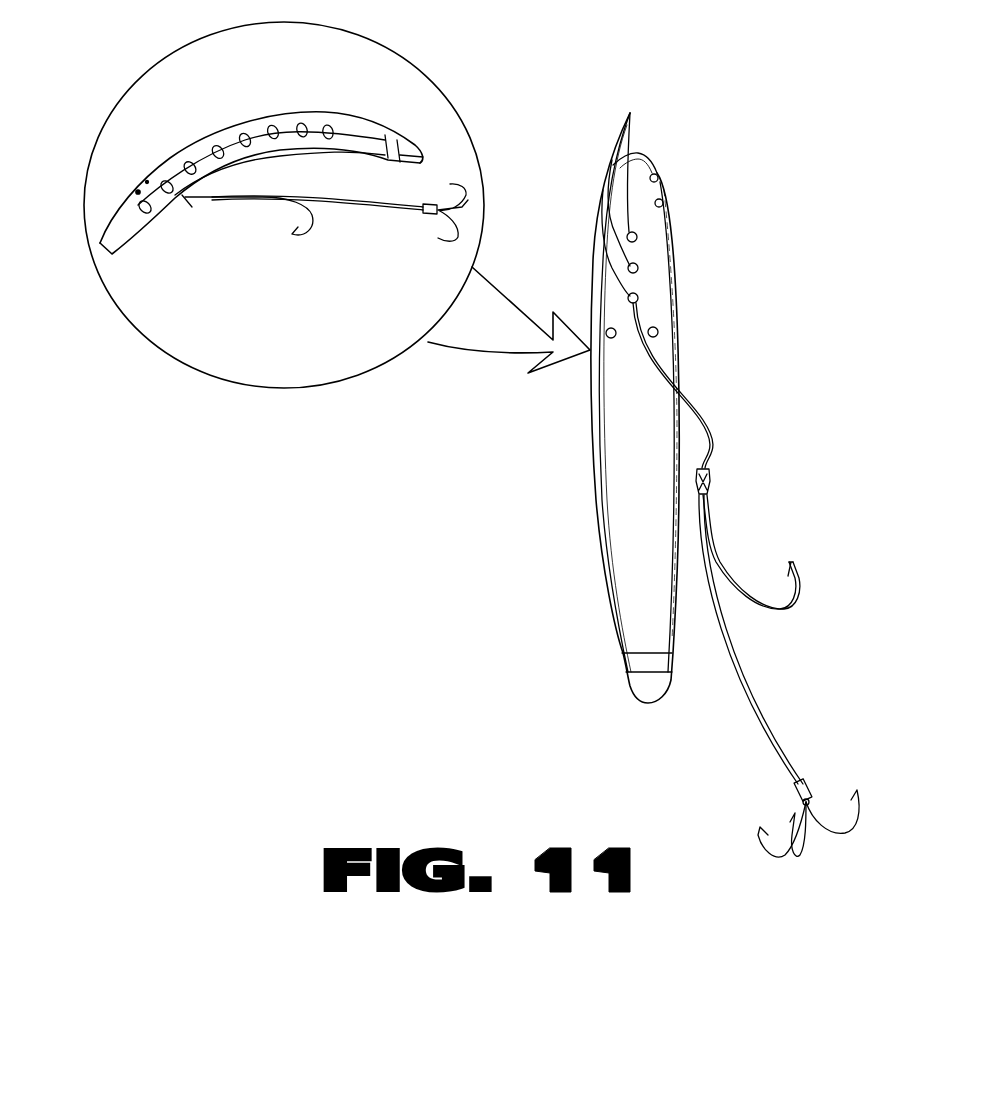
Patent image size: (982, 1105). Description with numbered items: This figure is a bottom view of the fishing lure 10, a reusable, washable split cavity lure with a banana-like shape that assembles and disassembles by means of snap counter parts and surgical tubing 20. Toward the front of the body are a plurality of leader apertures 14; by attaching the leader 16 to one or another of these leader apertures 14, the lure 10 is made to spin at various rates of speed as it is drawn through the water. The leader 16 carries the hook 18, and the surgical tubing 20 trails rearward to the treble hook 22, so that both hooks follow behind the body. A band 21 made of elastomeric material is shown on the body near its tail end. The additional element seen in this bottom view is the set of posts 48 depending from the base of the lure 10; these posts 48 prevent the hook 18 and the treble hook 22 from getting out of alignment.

The fishing lure 10 is at (600, 538).
The leader apertures 14 is at (630, 113).
The leader 16 is at (693, 405).
The hook 18 is at (803, 594).
The surgical tubing 20 is at (777, 753).
The band 21 is at (620, 673).
The treble hook 22 is at (837, 837).
The posts 48 is at (660, 333).